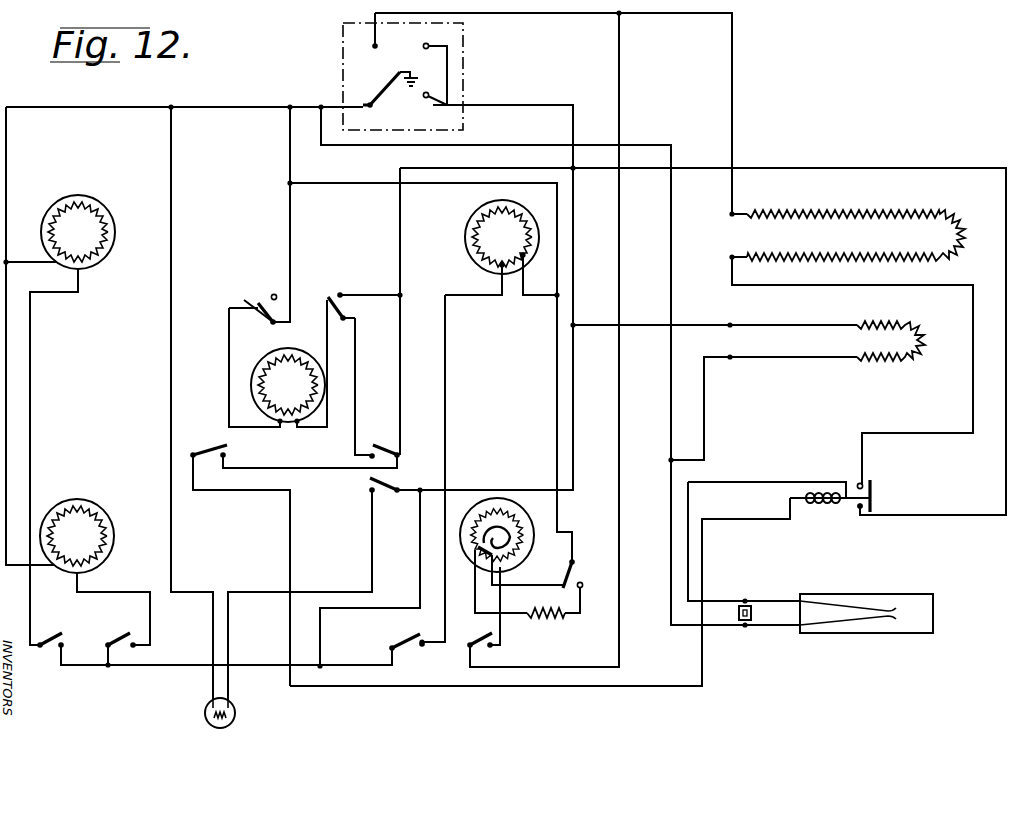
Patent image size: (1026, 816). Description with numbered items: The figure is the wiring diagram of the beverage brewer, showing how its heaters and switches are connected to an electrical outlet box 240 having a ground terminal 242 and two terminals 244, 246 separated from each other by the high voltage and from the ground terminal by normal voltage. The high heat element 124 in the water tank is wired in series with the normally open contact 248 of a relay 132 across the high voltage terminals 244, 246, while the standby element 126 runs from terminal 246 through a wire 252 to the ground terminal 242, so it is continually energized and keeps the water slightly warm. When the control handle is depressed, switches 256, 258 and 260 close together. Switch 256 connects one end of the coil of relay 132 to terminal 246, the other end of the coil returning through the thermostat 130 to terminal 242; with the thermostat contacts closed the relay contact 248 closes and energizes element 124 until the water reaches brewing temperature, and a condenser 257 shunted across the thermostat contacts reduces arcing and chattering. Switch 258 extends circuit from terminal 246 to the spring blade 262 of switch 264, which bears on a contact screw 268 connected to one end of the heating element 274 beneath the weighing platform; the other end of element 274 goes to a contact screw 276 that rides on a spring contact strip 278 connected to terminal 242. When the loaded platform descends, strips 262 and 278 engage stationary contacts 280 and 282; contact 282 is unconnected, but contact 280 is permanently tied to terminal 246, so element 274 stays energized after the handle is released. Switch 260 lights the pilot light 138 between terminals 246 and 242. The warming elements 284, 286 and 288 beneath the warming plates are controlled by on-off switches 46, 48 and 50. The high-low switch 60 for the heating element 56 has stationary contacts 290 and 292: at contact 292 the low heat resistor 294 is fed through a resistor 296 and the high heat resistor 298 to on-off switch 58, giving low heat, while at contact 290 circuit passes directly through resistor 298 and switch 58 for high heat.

The on-off switch 46 is at (120, 636).
The on-off switch 48 is at (53, 636).
The on-off switch 50 is at (402, 644).
The heating element 56 is at (528, 510).
The on-off switch 58 is at (482, 642).
The high-low switch 60 is at (581, 566).
The high heat element 124 is at (835, 212).
The standby element 126 is at (826, 380).
The thermostat 130 is at (893, 650).
The relay 132 is at (825, 482).
The pilot light 138 is at (205, 714).
The electrical outlet box 240 is at (343, 58).
The terminal 242 is at (362, 100).
The terminal 244 is at (372, 46).
The terminal 246 is at (432, 95).
The normally open contact 248 is at (873, 493).
The wire 252 is at (671, 306).
The switch 256 is at (208, 448).
The condenser 257 is at (757, 615).
The switch 258 is at (380, 440).
The switch 260 is at (398, 484).
The spring blade 262 is at (335, 292).
The switch 264 is at (358, 312).
The contact screw 268 is at (325, 305).
The heating element 274 is at (298, 365).
The contact screw 276 is at (257, 306).
The spring contact strip 278 is at (258, 300).
The stationary contact 280 is at (343, 295).
The stationary contact 282 is at (274, 294).
The warming element 284 is at (90, 508).
The warming element 286 is at (90, 205).
The warming element 288 is at (466, 237).
The stationary contact 290 is at (582, 590).
The stationary contact 292 is at (561, 580).
The low heat resistor 294 is at (522, 532).
The resistor 296 is at (543, 619).
The high heat resistor 298 is at (506, 502).